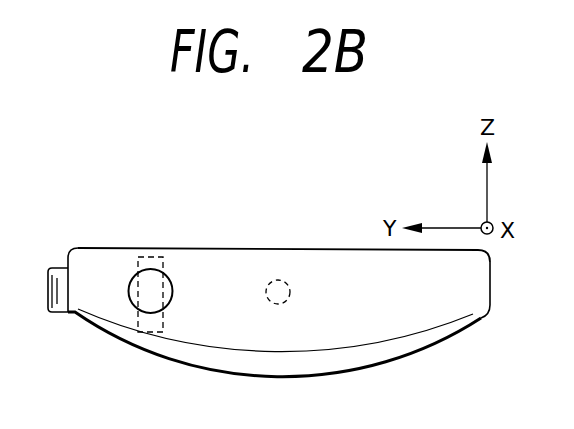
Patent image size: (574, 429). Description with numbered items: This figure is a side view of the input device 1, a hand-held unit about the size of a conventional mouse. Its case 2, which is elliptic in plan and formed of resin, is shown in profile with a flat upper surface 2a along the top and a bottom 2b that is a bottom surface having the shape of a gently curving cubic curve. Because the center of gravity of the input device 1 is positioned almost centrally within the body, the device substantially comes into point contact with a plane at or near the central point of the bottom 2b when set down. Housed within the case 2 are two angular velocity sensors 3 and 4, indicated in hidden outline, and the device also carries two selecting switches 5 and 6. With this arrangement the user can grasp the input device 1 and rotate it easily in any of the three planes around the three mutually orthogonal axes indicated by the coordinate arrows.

The input device 1 is at (238, 226).
The case 2 is at (418, 318).
The upper surface 2a is at (308, 248).
The bottom 2b is at (318, 362).
The angular velocity sensor 3 is at (173, 290).
The angular velocity sensor 4 is at (290, 293).
The selecting switch 5 is at (59, 279).
The selecting switch 6 is at (150, 302).